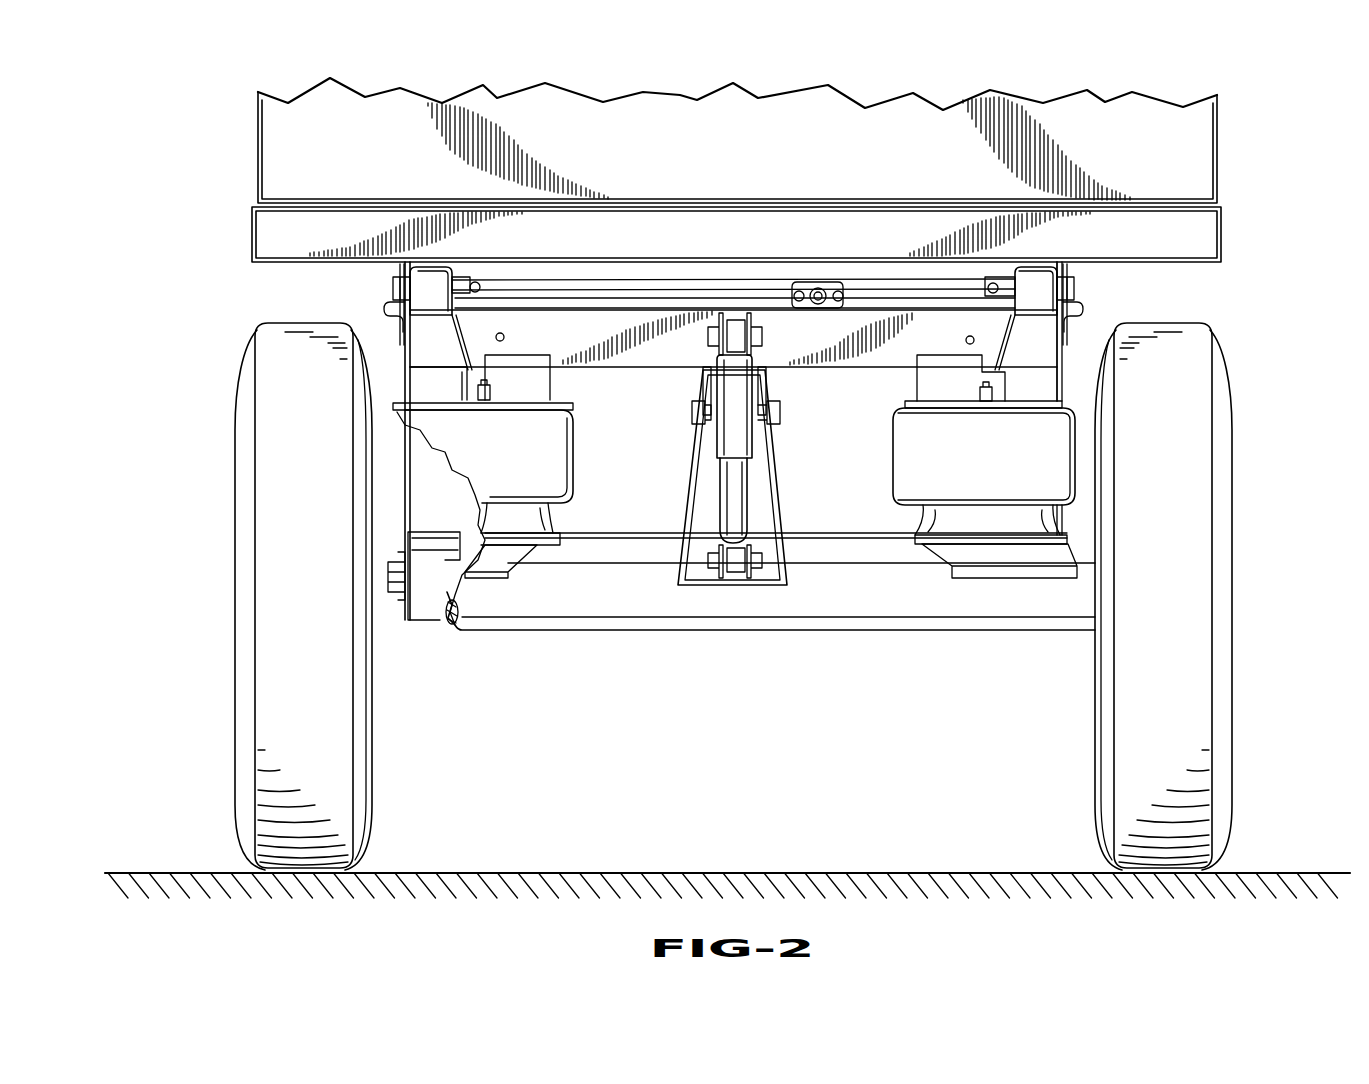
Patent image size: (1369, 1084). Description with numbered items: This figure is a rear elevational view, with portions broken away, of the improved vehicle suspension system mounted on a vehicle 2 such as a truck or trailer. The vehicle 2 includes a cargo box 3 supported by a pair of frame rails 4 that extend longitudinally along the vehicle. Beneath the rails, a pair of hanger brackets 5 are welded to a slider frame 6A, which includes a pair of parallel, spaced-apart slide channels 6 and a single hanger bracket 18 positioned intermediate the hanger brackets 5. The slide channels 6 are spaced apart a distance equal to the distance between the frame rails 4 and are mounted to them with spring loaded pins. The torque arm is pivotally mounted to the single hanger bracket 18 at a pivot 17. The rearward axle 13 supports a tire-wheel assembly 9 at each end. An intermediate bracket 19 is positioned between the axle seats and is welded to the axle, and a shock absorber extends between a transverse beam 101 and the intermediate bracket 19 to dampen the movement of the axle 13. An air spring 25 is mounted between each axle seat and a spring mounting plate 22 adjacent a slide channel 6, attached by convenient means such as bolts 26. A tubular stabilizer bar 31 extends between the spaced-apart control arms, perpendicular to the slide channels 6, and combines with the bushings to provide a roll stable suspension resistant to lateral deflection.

The vehicle 2 is at (1238, 234).
The cargo box 3 is at (1196, 162).
The frame rails 4 is at (432, 293).
The hanger brackets 5 is at (405, 498).
The slide channels 6 is at (1060, 386).
The slider frame 6A is at (1058, 362).
The tire-wheel assembly 9 is at (1233, 430).
The rearward axle 13 is at (973, 600).
The pivot 17 is at (697, 420).
The single hanger bracket 18 is at (762, 378).
The intermediate bracket 19 is at (762, 502).
The spring mounting plate 22 is at (538, 405).
The air spring 25 is at (553, 478).
The bolts 26 is at (487, 392).
The tubular stabilizer bar 31 is at (845, 548).
The transverse beam 101 is at (783, 337).